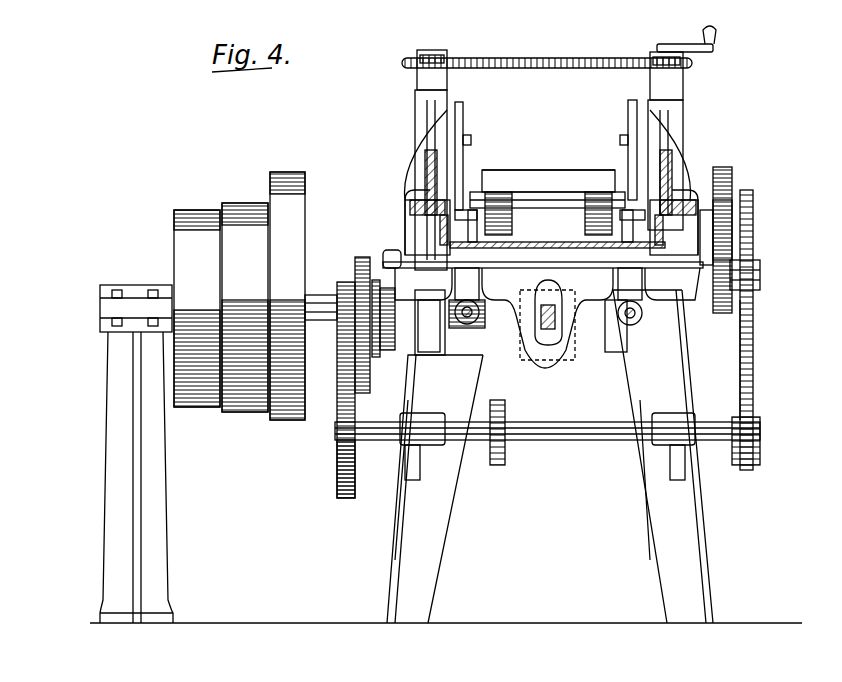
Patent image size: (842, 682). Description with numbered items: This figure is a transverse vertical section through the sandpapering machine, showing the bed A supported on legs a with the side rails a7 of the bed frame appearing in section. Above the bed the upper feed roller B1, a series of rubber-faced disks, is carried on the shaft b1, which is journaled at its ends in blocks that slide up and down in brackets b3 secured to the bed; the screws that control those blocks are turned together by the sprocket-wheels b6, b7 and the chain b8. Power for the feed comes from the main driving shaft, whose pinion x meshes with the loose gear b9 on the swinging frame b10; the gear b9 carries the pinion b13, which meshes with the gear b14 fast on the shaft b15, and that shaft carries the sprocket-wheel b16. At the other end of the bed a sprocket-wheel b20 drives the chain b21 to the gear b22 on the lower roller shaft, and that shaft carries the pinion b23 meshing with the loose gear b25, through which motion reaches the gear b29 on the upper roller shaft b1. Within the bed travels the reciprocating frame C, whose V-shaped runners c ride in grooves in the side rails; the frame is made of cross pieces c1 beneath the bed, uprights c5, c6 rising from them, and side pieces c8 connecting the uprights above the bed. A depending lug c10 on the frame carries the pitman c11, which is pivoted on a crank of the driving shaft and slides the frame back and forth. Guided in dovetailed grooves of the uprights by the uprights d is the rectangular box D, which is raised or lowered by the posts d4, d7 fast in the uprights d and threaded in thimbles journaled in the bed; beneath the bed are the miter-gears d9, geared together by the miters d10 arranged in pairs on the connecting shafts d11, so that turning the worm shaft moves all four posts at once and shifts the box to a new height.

The sprocket-wheel b7 is at (417, 66).
The chain b8 is at (552, 68).
The bracket b3 is at (696, 130).
The upright d is at (464, 126).
The reciprocating frame C is at (420, 180).
The runner c is at (445, 225).
The side piece c8 is at (440, 175).
The box D is at (495, 175).
The upper feed roller B1 is at (500, 215).
The shaft of the upper feed rollers b1 is at (555, 198).
The side rail a7 is at (786, 190).
The upright c5 is at (410, 210).
The upright c6 is at (690, 205).
The bed A is at (395, 258).
The post d7 is at (497, 213).
The connecting shaft d11 is at (455, 362).
The post d4 is at (602, 213).
The gear b29 is at (735, 178).
The loose gear b25 is at (735, 228).
The gear b22 is at (754, 246).
The pinion b23 is at (758, 300).
The chain b21 is at (755, 345).
The sprocket-wheel b20 is at (758, 418).
The loose gear b9 is at (380, 378).
The pinion x is at (316, 300).
The cross piece c1 is at (522, 333).
The miter-gear d9 is at (480, 310).
The miter d10 is at (500, 312).
The depending lug c10 is at (535, 345).
The pitman c11 is at (552, 340).
The swinging frame b10 is at (360, 320).
The pinion b13 is at (345, 340).
The gear b14 is at (345, 420).
The shaft b15 is at (395, 440).
The sprocket-wheel b16 is at (506, 450).
The leg a is at (436, 493).
The sprocket-wheel b6 is at (685, 66).